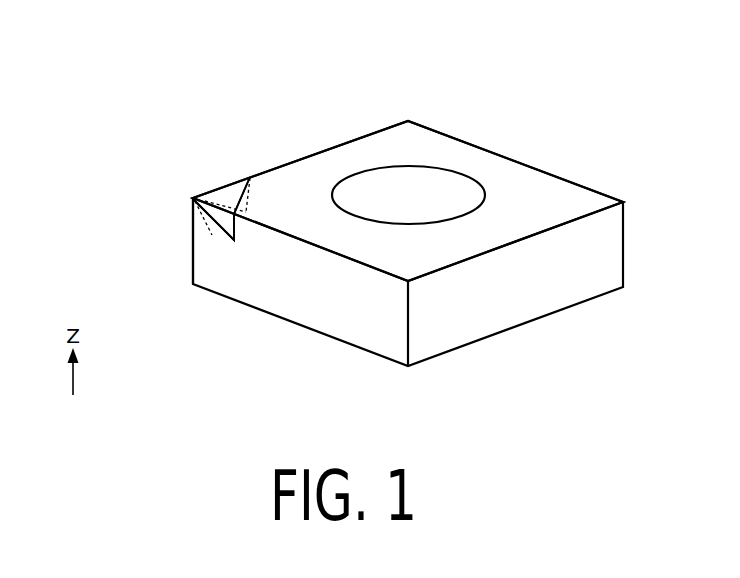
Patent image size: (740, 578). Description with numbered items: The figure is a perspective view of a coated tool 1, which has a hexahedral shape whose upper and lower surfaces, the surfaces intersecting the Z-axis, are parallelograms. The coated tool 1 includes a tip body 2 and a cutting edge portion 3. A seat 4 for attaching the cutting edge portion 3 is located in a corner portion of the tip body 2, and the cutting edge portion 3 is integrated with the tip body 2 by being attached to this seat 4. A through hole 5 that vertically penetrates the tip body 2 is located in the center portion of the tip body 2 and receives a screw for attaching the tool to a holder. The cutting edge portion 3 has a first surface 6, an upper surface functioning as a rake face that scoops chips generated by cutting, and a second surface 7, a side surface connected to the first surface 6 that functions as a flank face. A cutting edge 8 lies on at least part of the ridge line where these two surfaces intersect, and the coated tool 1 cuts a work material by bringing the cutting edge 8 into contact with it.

The coated tool 1 is at (190, 58).
The tip body 2 is at (348, 160).
The cutting edge portion 3 is at (185, 178).
The seat 4 is at (212, 235).
The through hole 5 is at (455, 197).
The first surface 6 is at (225, 197).
The second surface 7 is at (193, 216).
The cutting edge 8 is at (191, 257).